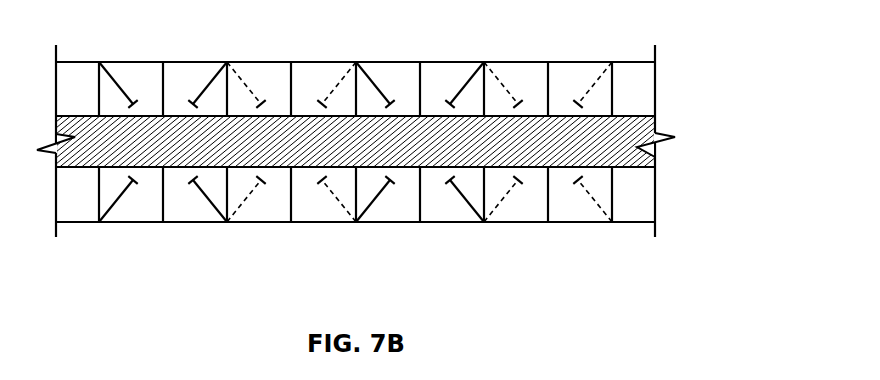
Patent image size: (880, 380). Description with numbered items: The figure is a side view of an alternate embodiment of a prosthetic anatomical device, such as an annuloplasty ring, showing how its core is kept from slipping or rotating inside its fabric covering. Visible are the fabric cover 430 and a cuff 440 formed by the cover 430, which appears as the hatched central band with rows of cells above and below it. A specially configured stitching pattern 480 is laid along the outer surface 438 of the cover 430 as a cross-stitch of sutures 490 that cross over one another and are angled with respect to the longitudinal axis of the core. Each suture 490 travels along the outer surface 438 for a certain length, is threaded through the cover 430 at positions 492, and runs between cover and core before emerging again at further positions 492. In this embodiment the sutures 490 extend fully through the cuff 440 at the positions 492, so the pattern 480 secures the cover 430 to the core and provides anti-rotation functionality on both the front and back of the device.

The fabric cover 430 is at (452, 62).
The outer surface of cover 438 is at (637, 93).
The cuff 440 is at (647, 158).
The stitching pattern 480 is at (493, 247).
The sutures 490 is at (331, 91).
The positions 492 is at (192, 107).